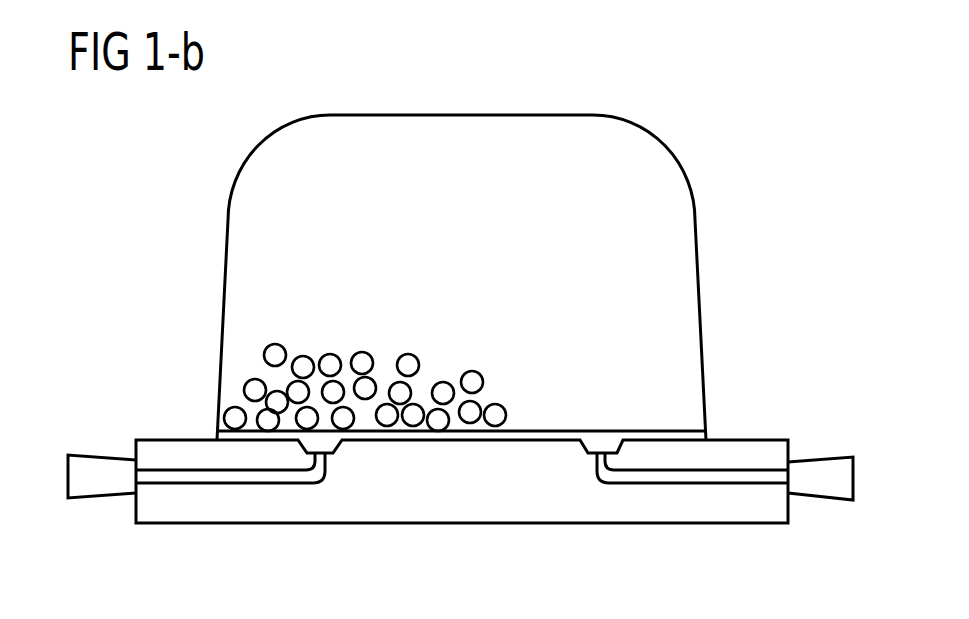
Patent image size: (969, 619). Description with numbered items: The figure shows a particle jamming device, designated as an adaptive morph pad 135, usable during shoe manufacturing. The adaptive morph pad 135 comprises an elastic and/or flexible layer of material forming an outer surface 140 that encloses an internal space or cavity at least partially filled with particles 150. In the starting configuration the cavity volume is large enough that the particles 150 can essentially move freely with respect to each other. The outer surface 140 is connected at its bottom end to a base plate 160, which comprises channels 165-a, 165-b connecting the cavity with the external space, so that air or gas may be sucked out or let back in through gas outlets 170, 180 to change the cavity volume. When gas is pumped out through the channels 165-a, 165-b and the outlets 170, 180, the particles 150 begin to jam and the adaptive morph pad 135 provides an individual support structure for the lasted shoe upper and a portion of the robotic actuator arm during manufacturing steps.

The adaptive morph pad 135 is at (188, 250).
The outer surface 140 is at (667, 150).
The particles 150 is at (272, 352).
The base plate 160 is at (478, 502).
The channel 165-a is at (223, 483).
The channel 165-b is at (707, 483).
The gas outlet 170 is at (102, 470).
The gas outlet 180 is at (823, 470).